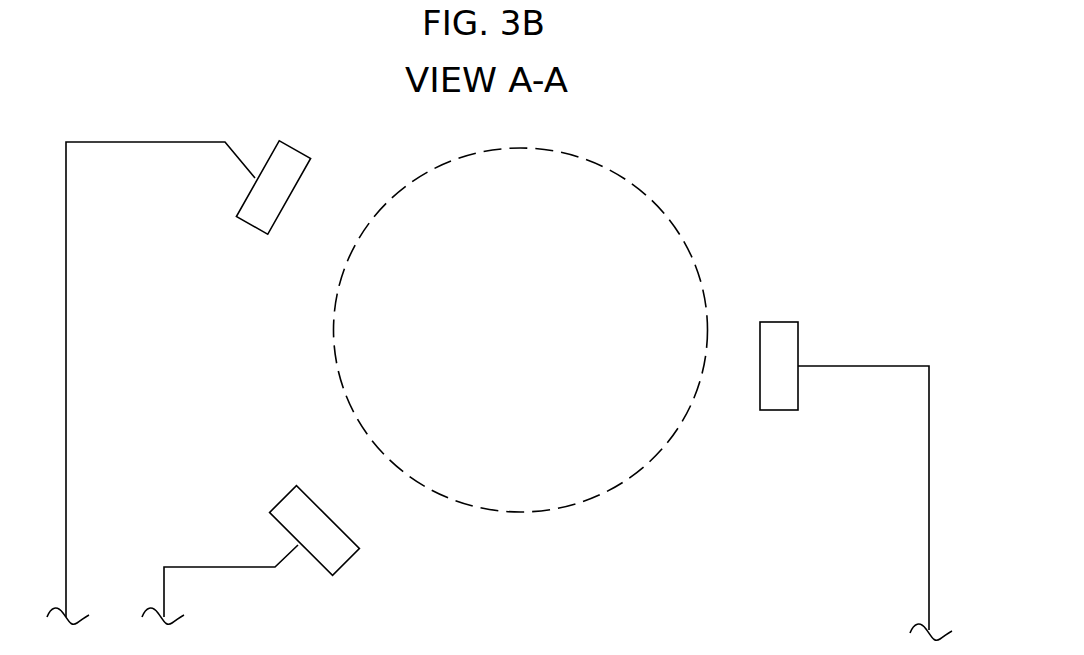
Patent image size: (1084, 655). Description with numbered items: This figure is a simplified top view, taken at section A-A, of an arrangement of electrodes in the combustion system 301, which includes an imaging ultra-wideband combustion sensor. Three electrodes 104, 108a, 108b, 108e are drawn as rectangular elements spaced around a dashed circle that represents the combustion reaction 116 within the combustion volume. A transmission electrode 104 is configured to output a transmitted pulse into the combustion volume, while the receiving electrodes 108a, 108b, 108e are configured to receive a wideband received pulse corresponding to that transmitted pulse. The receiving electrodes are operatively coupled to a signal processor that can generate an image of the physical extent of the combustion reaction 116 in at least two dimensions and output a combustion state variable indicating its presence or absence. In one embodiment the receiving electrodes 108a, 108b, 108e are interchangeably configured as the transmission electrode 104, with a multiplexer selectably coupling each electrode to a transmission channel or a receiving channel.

The transmission electrode 104 is at (545, 375).
The receiving electrode 108a is at (250, 226).
The receiving electrode 108b is at (780, 322).
The receiving electrode 108e is at (352, 555).
The combustion reaction 116 is at (340, 384).
The combustion system 301 is at (744, 168).